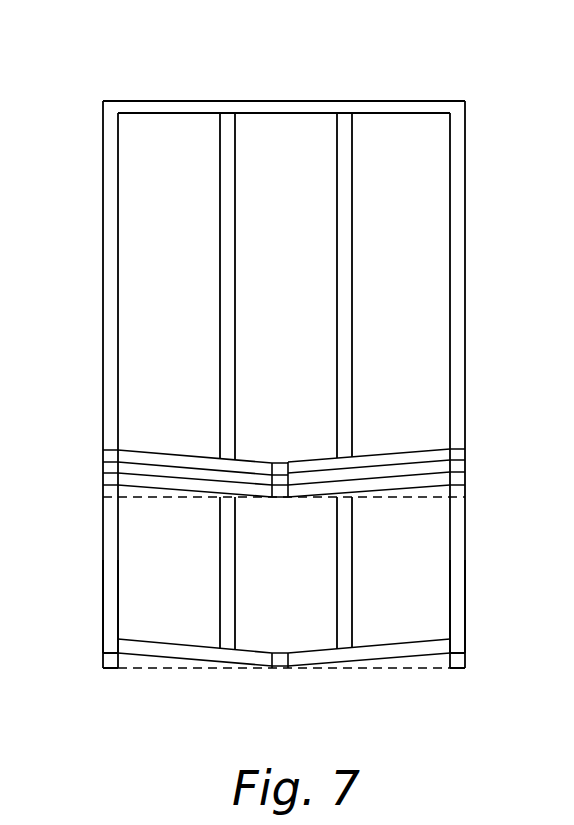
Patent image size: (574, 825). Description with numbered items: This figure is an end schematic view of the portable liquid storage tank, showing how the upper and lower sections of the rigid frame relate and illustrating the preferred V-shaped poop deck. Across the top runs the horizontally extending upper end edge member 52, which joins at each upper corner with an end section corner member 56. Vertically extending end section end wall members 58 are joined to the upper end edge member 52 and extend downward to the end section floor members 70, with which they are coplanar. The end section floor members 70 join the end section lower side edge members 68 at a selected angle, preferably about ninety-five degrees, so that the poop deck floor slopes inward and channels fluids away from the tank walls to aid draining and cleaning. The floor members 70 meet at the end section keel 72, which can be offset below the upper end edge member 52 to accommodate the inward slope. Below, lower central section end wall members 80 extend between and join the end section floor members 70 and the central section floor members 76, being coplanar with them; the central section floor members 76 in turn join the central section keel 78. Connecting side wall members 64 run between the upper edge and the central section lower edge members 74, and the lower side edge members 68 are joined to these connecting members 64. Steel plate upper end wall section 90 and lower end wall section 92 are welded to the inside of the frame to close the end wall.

The upper end edge member 52 is at (143, 102).
The end section corner member 56 is at (113, 288).
The end section end wall member 58 is at (227, 225).
The upper end wall section 90 is at (282, 138).
The end section floor member 70 is at (145, 450).
The end section keel 72 is at (278, 467).
The end section lower side edge member 68 is at (112, 453).
The lower central section end wall member 80 is at (228, 583).
The lower end wall section 92 is at (428, 578).
The connecting side wall member 64 is at (110, 610).
The central section lower edge member 74 is at (110, 657).
The central section floor member 76 is at (158, 650).
The central section keel 78 is at (278, 670).